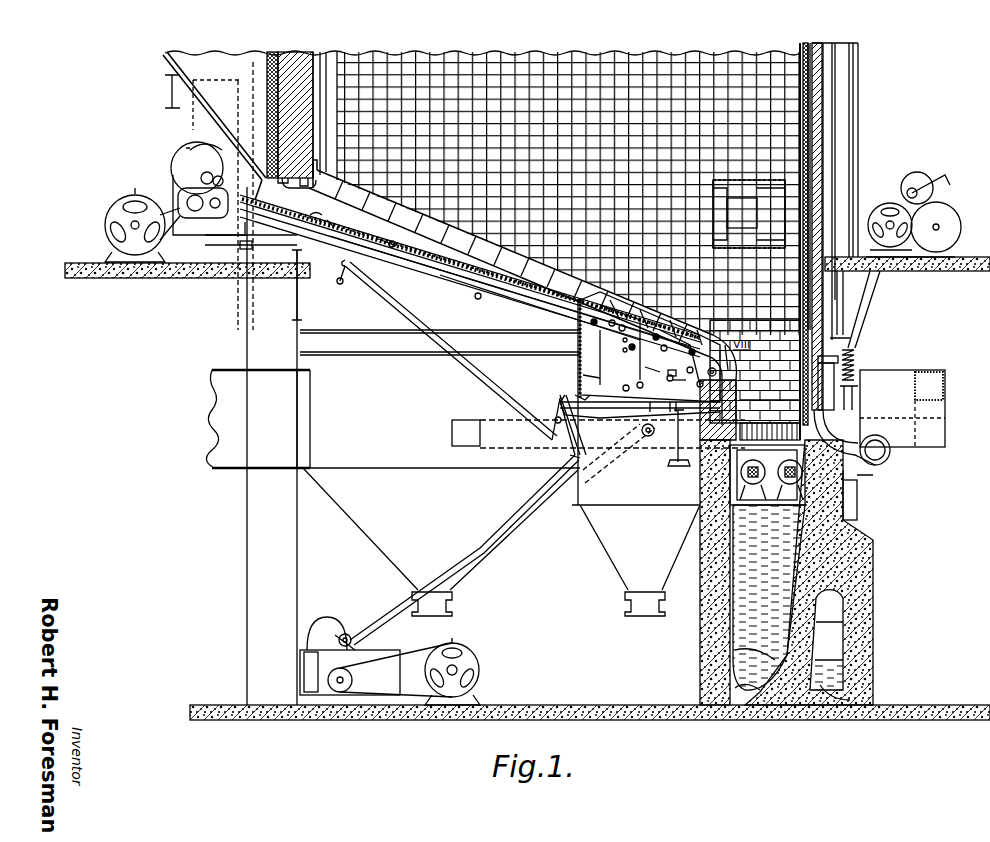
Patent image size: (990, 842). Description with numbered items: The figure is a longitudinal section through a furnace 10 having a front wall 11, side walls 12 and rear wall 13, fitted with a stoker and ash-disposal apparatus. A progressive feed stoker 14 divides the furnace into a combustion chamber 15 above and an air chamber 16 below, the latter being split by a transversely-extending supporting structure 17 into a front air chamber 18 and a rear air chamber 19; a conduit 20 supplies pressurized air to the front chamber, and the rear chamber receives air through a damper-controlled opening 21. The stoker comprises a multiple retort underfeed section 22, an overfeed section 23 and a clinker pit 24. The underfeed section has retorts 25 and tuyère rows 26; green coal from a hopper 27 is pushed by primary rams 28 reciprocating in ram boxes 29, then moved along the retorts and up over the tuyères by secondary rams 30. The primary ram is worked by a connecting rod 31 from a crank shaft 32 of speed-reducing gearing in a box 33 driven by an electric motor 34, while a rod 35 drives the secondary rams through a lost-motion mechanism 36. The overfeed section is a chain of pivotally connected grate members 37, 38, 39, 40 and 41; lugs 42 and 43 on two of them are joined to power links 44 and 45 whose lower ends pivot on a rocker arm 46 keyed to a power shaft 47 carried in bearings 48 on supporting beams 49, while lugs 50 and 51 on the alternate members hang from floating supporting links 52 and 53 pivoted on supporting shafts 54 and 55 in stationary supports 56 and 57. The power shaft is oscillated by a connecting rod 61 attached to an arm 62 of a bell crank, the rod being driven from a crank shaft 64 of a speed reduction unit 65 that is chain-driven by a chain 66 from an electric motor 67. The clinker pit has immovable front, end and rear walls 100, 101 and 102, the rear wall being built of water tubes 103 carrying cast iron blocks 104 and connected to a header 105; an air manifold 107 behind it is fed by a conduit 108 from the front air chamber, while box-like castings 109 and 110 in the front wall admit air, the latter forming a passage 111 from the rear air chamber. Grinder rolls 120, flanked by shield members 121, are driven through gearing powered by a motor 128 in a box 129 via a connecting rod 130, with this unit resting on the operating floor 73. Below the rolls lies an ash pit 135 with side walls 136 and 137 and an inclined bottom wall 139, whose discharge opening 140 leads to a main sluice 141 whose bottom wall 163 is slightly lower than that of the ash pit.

The furnace 10 is at (790, 108).
The front wall 11 is at (300, 58).
The side walls 12 is at (526, 106).
The rear wall 13 is at (818, 130).
The progressive feed stoker 14 is at (533, 264).
The combustion chamber 15 is at (526, 174).
The air chamber 16 is at (438, 311).
The transversely-extending supporting structure 17 is at (580, 372).
The front air chamber 18 is at (375, 460).
The rear air chamber 19 is at (612, 488).
The conduit 20 is at (230, 442).
The damper-controlled opening 21 is at (556, 401).
The multiple retort underfeed section 22 is at (392, 246).
The overfeed section 23 is at (700, 330).
The clinker pit 24 is at (750, 386).
The retorts 25 is at (310, 232).
The tuyère rows 26 is at (385, 240).
The hopper 27 is at (215, 120).
The primary rams 28 is at (282, 183).
The ram boxes 29 is at (235, 152).
The secondary rams 30 is at (418, 262).
The connecting rod 31 is at (180, 203).
The crank shaft 32 is at (200, 178).
The box 33 is at (185, 165).
The electric motor 34 is at (112, 222).
The rod 35 is at (476, 288).
The lost-motion mechanism 36 is at (298, 248).
The grate member 37 is at (616, 306).
The grate member 38 is at (646, 310).
The grate member 39 is at (675, 320).
The grate member 40 is at (703, 328).
The grate member 41 is at (727, 345).
The lug 42 is at (608, 326).
The lug 43 is at (661, 349).
The power link 44 is at (600, 352).
The power link 45 is at (648, 365).
The rocker arm 46 is at (600, 378).
The power shaft 47 is at (622, 418).
The bearings 48 is at (590, 396).
The supporting beams 49 is at (606, 412).
The lug 50 is at (624, 333).
The lug 51 is at (690, 367).
The floating supporting link 52 is at (623, 346).
The floating supporting link 53 is at (669, 367).
The supporting shaft 54 is at (623, 356).
The supporting shaft 55 is at (677, 376).
The stationary support 56 is at (647, 380).
The stationary support 57 is at (657, 407).
The connecting rod 61 is at (518, 530).
The arm 62 is at (642, 429).
The crank shaft 64 is at (350, 635).
The speed reduction unit 65 is at (322, 618).
The chain 66 is at (405, 665).
The electric motor 67 is at (470, 658).
The operating floor 73 is at (962, 257).
The front wall 100 is at (745, 407).
The end walls 101 is at (835, 352).
The rear wall 102 is at (846, 430).
The water tubes 103 is at (856, 375).
The cast iron blocks 104 is at (858, 390).
The header 105 is at (891, 452).
The air manifold 107 is at (838, 366).
The conduit 108 is at (962, 436).
The box-like castings 109 is at (712, 365).
The box-like castings 110 is at (678, 420).
The passage 111 is at (686, 404).
The grinder rolls 120 is at (860, 500).
The shield members 121 is at (767, 475).
The motor 128 is at (876, 210).
The box 129 is at (917, 172).
The connecting rod 130 is at (855, 328).
The ash pit 135 is at (702, 625).
The side wall 136 is at (705, 645).
The side wall 137 is at (823, 567).
The bottom wall 139 is at (710, 668).
The discharge opening 140 is at (712, 686).
The main sluice 141 is at (835, 636).
The bottom wall 163 is at (850, 690).